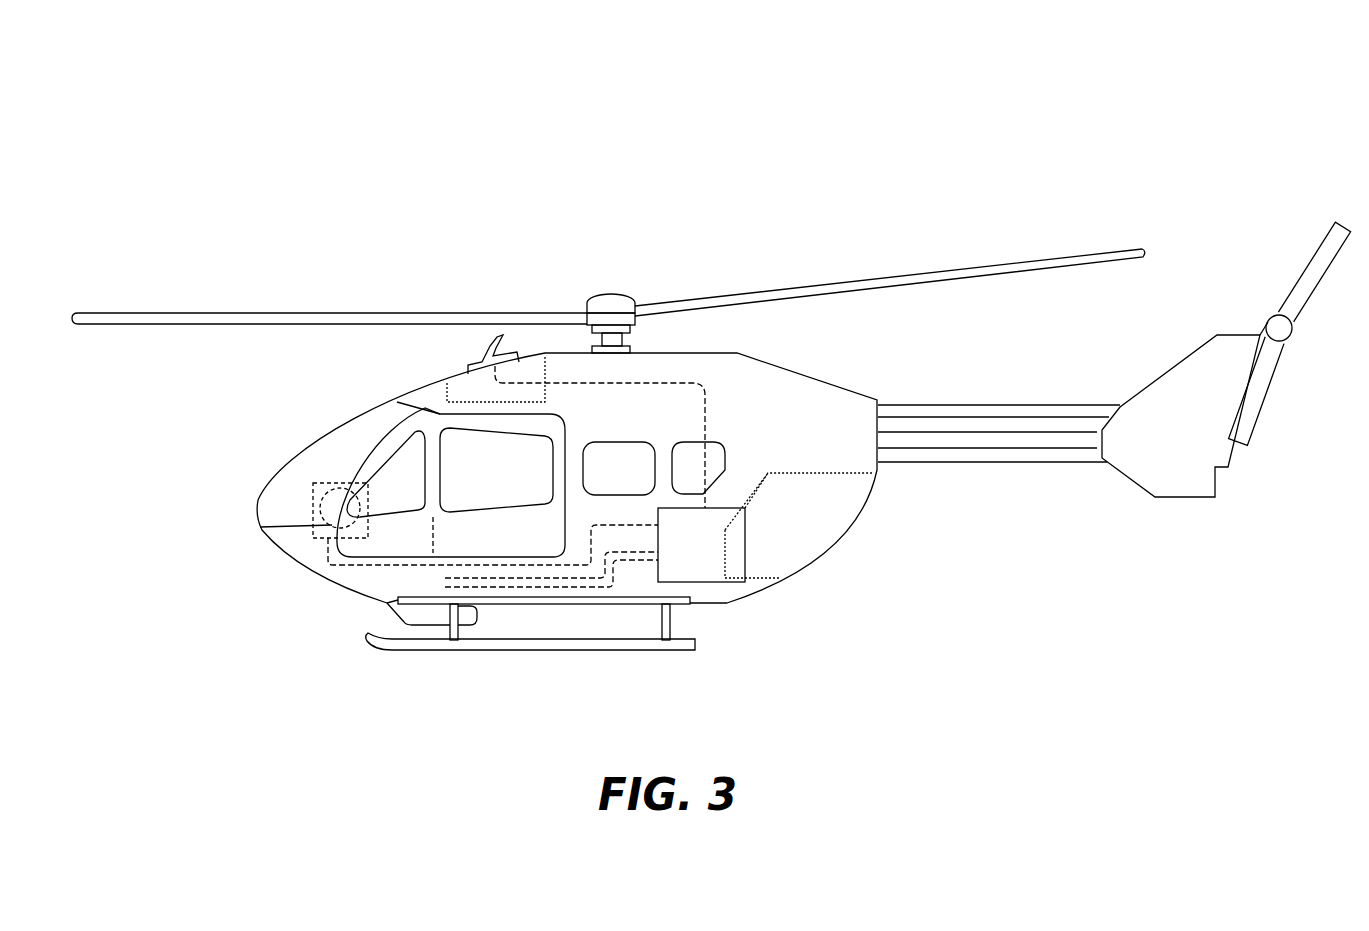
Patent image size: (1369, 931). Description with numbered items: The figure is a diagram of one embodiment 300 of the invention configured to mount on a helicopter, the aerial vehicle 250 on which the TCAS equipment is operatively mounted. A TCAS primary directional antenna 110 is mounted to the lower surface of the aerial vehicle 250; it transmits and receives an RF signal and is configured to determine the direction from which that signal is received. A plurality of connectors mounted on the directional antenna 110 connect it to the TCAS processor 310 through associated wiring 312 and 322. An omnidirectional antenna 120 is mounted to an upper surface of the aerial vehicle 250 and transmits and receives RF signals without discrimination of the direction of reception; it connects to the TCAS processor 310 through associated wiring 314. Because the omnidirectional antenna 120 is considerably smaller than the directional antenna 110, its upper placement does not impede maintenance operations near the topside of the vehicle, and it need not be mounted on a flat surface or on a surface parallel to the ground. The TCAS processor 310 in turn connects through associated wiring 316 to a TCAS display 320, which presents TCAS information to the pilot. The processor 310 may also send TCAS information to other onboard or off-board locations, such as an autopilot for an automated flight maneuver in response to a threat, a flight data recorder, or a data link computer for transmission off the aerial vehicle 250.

The helicopter 300 is at (293, 193).
The TCAS primary directional antenna 110 is at (423, 626).
The omnidirectional antenna 120 is at (487, 338).
The aerial vehicle 250 is at (800, 460).
The TCAS processor 310 is at (703, 578).
The wiring 312 is at (637, 562).
The wiring 314 is at (682, 385).
The wiring 316 is at (400, 568).
The TCAS display 320 is at (330, 525).
The wiring 322 is at (443, 586).